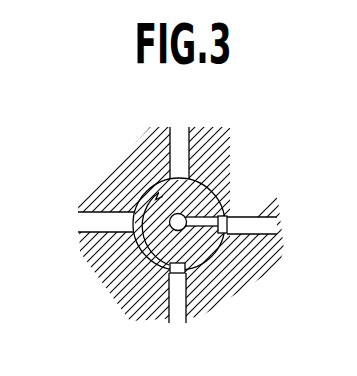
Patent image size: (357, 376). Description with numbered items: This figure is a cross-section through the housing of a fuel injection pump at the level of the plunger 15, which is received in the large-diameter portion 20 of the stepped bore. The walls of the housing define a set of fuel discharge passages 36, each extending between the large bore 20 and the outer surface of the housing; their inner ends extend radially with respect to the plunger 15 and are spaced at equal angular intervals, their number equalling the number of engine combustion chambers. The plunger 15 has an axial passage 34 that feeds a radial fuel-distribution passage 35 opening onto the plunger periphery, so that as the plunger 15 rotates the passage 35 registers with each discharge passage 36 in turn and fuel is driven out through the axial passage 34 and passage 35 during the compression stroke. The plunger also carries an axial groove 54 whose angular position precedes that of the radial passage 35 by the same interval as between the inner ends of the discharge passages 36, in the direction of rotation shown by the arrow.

The plunger 15 is at (122, 272).
The large-diameter portion of the bore 20 is at (198, 182).
The axial passage 34 is at (150, 185).
The radial fuel-distribution passage 35 is at (251, 225).
The fuel discharge passages 36 is at (177, 148).
The axial groove 54 is at (166, 275).